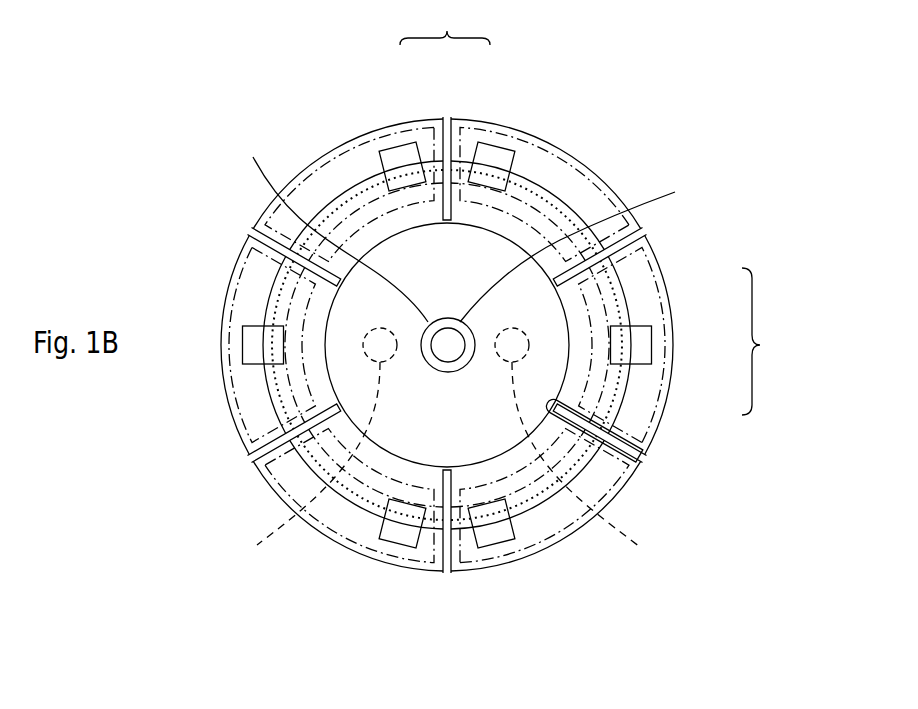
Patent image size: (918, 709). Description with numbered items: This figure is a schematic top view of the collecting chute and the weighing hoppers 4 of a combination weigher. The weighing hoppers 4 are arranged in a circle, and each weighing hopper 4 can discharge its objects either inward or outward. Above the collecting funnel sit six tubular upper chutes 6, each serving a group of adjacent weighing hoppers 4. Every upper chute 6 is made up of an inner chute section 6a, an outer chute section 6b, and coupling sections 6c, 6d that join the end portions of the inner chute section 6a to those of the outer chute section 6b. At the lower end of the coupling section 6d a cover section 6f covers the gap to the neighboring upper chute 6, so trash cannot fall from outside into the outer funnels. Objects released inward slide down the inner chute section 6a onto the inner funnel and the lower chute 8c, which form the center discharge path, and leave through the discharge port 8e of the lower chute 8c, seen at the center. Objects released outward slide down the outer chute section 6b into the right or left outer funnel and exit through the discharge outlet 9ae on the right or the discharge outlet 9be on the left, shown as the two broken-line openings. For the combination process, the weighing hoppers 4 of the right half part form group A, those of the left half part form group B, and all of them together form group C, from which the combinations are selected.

The upper chute 6 is at (455, 363).
The inner chute section 6a is at (630, 312).
The outer chute section 6b is at (677, 353).
The coupling section 6c is at (628, 250).
The coupling section 6d is at (620, 440).
The cover section 6f is at (598, 458).
The weighing hopper 4 is at (506, 150).
The lower chute 8c is at (332, 227).
The discharge port 8e is at (582, 248).
The discharge outlet 9be is at (313, 451).
The discharge outlet 9ae is at (578, 452).
The group A is at (490, 112).
The group B is at (412, 115).
The group C is at (445, 26).